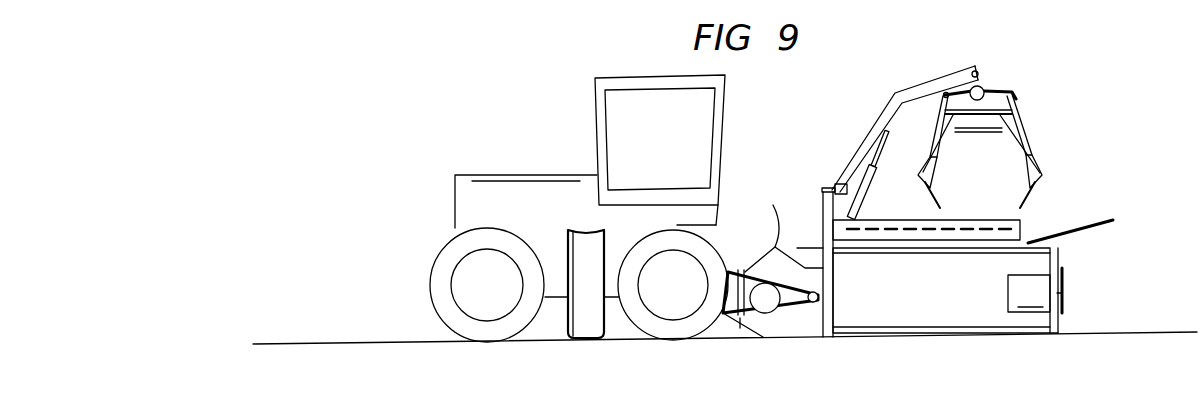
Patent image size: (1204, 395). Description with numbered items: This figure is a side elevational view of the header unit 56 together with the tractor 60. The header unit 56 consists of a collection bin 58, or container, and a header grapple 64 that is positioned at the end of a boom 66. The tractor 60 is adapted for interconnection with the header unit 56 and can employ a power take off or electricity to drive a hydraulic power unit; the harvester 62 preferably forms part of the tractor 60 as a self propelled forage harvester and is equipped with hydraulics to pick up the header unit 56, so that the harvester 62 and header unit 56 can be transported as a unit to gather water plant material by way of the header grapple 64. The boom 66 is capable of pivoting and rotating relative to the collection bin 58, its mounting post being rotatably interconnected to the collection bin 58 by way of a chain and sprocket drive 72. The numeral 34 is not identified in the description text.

The adjacent figure element (cut off) 34 is at (256, 1).
The header unit 56 is at (507, 145).
The collection bin 58 is at (1028, 243).
The tractor 60 is at (610, 78).
The harvester 62 is at (773, 205).
The header grapple 64 is at (1013, 98).
The boom 66 is at (927, 83).
The chain and sprocket drive 72 is at (1065, 278).